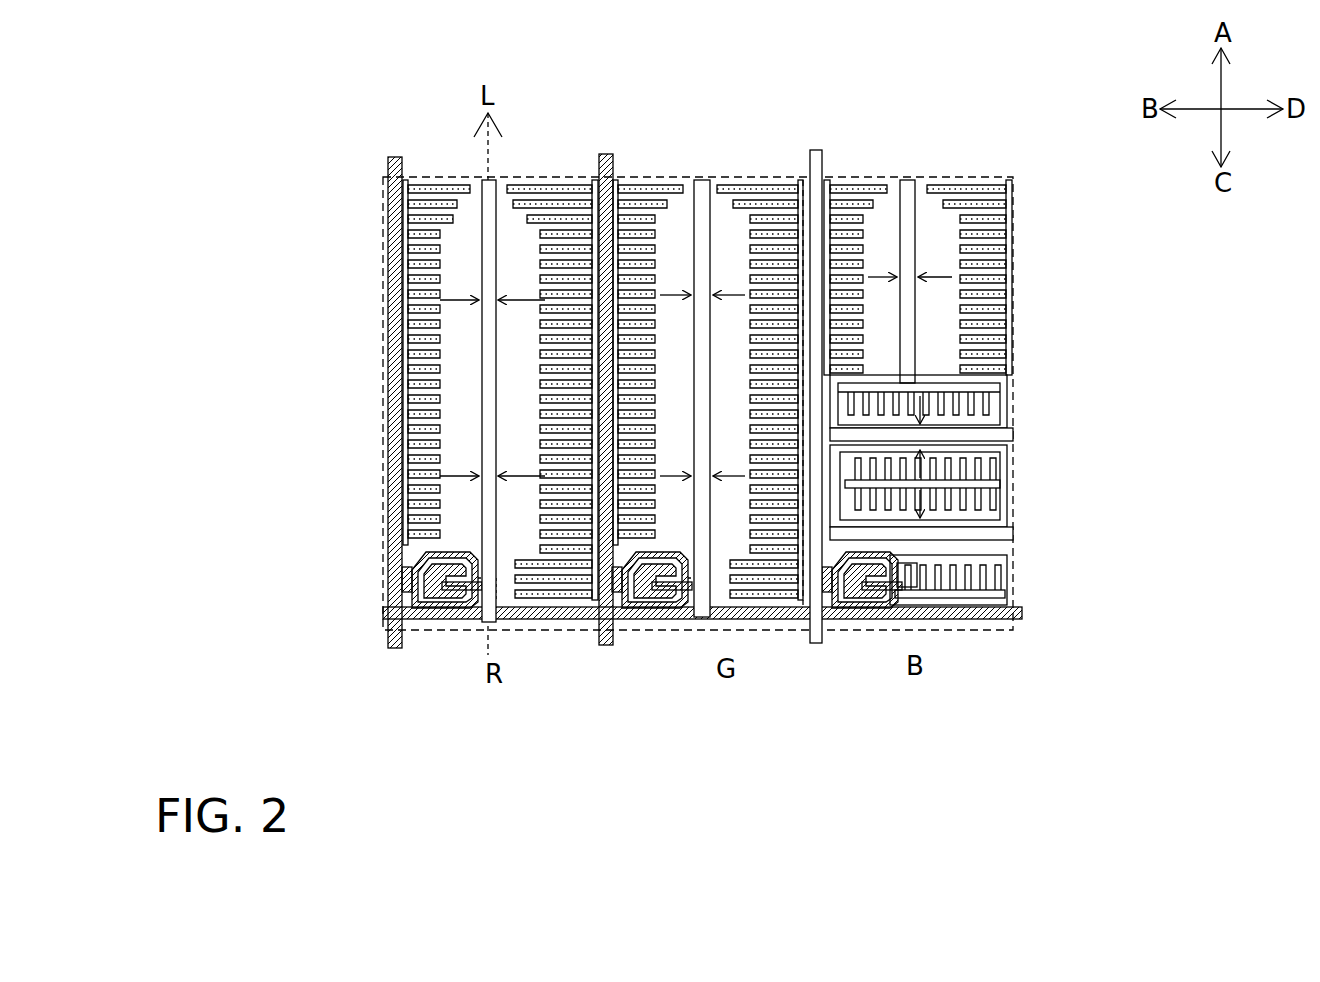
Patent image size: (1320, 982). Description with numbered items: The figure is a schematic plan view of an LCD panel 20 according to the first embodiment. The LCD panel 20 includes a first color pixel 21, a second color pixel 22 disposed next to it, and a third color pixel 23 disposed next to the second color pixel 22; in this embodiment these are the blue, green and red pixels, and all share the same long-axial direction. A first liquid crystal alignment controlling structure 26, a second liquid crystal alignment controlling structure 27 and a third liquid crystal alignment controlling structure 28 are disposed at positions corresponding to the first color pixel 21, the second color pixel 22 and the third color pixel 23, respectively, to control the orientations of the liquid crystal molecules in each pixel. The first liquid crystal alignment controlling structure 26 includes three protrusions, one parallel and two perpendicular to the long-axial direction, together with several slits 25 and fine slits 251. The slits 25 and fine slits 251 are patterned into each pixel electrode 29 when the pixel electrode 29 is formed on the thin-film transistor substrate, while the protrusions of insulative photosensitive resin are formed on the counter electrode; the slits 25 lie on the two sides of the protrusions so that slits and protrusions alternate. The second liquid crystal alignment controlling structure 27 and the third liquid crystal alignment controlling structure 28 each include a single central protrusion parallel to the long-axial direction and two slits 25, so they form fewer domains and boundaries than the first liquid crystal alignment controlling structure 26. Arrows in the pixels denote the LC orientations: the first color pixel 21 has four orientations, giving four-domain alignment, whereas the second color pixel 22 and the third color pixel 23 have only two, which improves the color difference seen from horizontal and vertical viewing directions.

The LCD panel 20 is at (120, 104).
The first color pixel 21 is at (905, 175).
The second color pixel 22 is at (690, 175).
The third color pixel 23 is at (402, 175).
The slit 25 is at (830, 172).
The fine slit 251 is at (395, 320).
The first liquid crystal alignment controlling structure 26 is at (1200, 302).
The second liquid crystal alignment controlling structure 27 is at (810, 755).
The third liquid crystal alignment controlling structure 28 is at (218, 415).
The pixel electrode 29 is at (388, 212).